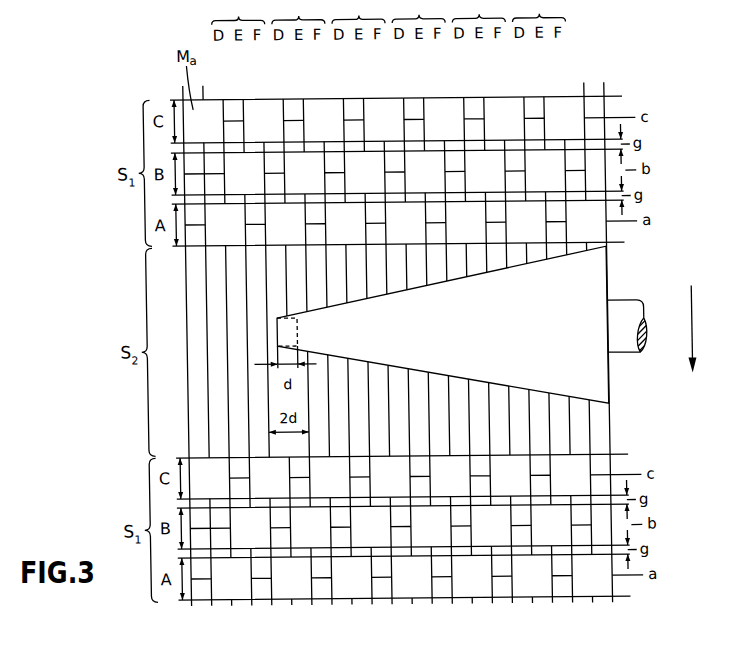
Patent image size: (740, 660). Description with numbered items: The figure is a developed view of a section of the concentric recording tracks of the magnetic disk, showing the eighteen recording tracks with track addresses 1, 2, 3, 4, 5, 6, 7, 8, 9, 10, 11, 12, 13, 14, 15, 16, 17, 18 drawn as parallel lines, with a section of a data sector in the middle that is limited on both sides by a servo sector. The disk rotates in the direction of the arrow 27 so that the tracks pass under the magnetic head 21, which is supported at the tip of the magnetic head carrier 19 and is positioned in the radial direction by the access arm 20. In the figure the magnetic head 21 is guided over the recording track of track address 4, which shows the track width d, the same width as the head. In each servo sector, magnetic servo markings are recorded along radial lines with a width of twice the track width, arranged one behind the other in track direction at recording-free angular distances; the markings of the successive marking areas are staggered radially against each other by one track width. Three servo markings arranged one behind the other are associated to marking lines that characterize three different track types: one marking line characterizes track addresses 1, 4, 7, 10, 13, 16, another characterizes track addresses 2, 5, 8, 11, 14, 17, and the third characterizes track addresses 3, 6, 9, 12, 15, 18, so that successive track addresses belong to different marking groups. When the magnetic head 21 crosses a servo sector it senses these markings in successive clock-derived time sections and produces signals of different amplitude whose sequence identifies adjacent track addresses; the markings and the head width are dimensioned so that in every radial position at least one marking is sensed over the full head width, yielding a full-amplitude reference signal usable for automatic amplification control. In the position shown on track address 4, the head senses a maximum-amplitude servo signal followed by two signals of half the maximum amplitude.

The track address 1 is at (223, 100).
The track address 2 is at (243, 100).
The track address 3 is at (263, 100).
The track address 4 is at (283, 100).
The track address 5 is at (303, 100).
The track address 6 is at (323, 100).
The track address 7 is at (343, 100).
The track address 8 is at (364, 100).
The track address 9 is at (384, 100).
The track address 10 is at (404, 100).
The track address 11 is at (424, 100).
The track address 12 is at (444, 100).
The track address 13 is at (464, 100).
The track address 14 is at (484, 100).
The track address 15 is at (504, 100).
The track address 16 is at (524, 100).
The track address 17 is at (544, 100).
The track address 18 is at (564, 100).
The magnetic head carrier 19 is at (466, 339).
The access arm 20 is at (629, 304).
The magnetic head 21 is at (296, 339).
The arrow 27 is at (689, 331).